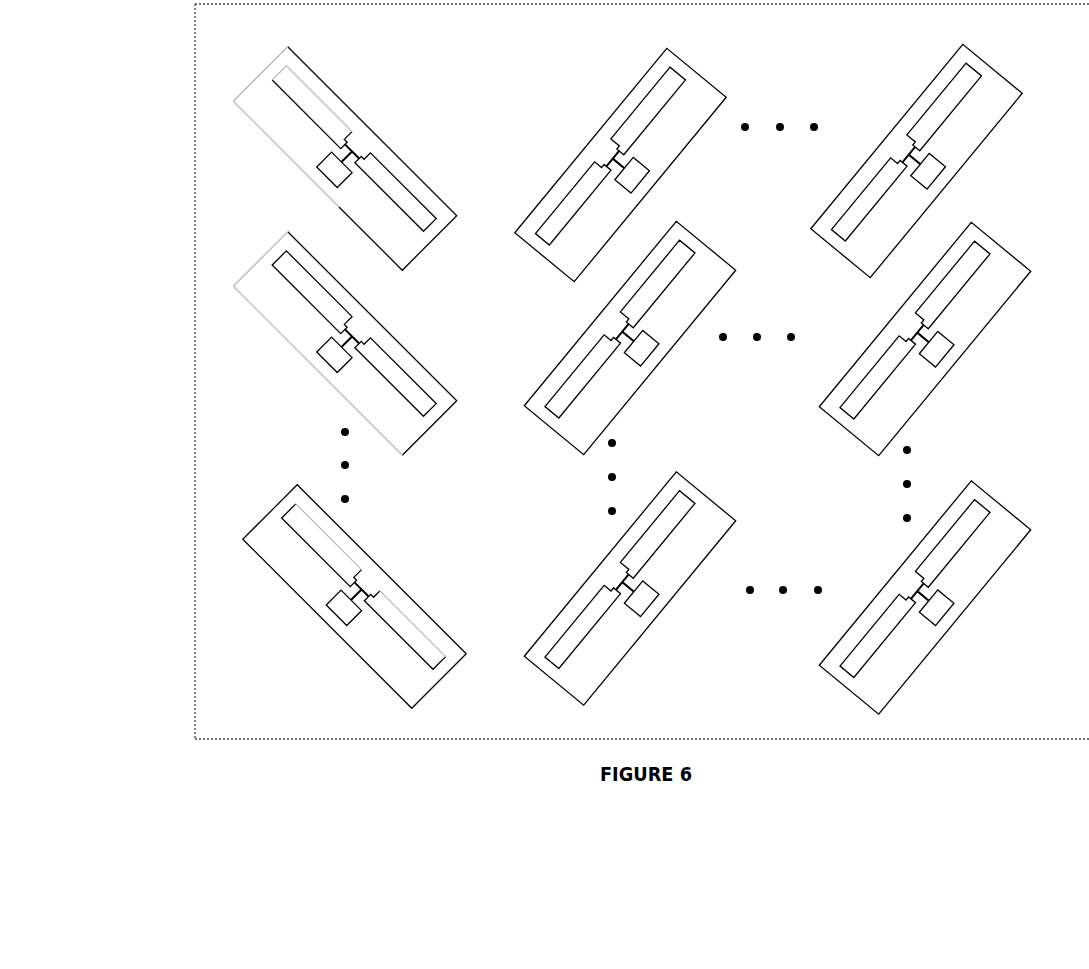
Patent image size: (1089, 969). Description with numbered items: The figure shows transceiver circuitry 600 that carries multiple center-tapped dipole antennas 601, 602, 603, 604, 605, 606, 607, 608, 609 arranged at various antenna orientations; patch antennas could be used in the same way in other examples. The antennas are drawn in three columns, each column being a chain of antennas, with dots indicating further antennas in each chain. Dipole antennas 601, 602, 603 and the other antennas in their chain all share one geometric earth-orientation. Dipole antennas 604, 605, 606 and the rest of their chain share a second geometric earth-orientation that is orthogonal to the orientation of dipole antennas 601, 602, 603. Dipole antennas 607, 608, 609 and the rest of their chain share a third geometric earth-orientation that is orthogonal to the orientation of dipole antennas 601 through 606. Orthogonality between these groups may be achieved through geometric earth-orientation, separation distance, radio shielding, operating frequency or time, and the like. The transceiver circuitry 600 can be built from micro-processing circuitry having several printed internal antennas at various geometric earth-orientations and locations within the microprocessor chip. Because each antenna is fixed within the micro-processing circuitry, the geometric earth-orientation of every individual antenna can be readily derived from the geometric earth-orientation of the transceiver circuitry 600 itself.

The transceiver circuitry 600 is at (642, 371).
The center-tapped dipole antenna 601 is at (436, 196).
The center-tapped dipole antenna 602 is at (404, 347).
The center-tapped dipole antenna 603 is at (432, 618).
The center-tapped dipole antenna 604 is at (719, 95).
The center-tapped dipole antenna 605 is at (733, 269).
The center-tapped dipole antenna 606 is at (726, 521).
The center-tapped dipole antenna 607 is at (1017, 93).
The center-tapped dipole antenna 608 is at (1025, 265).
The center-tapped dipole antenna 609 is at (990, 498).